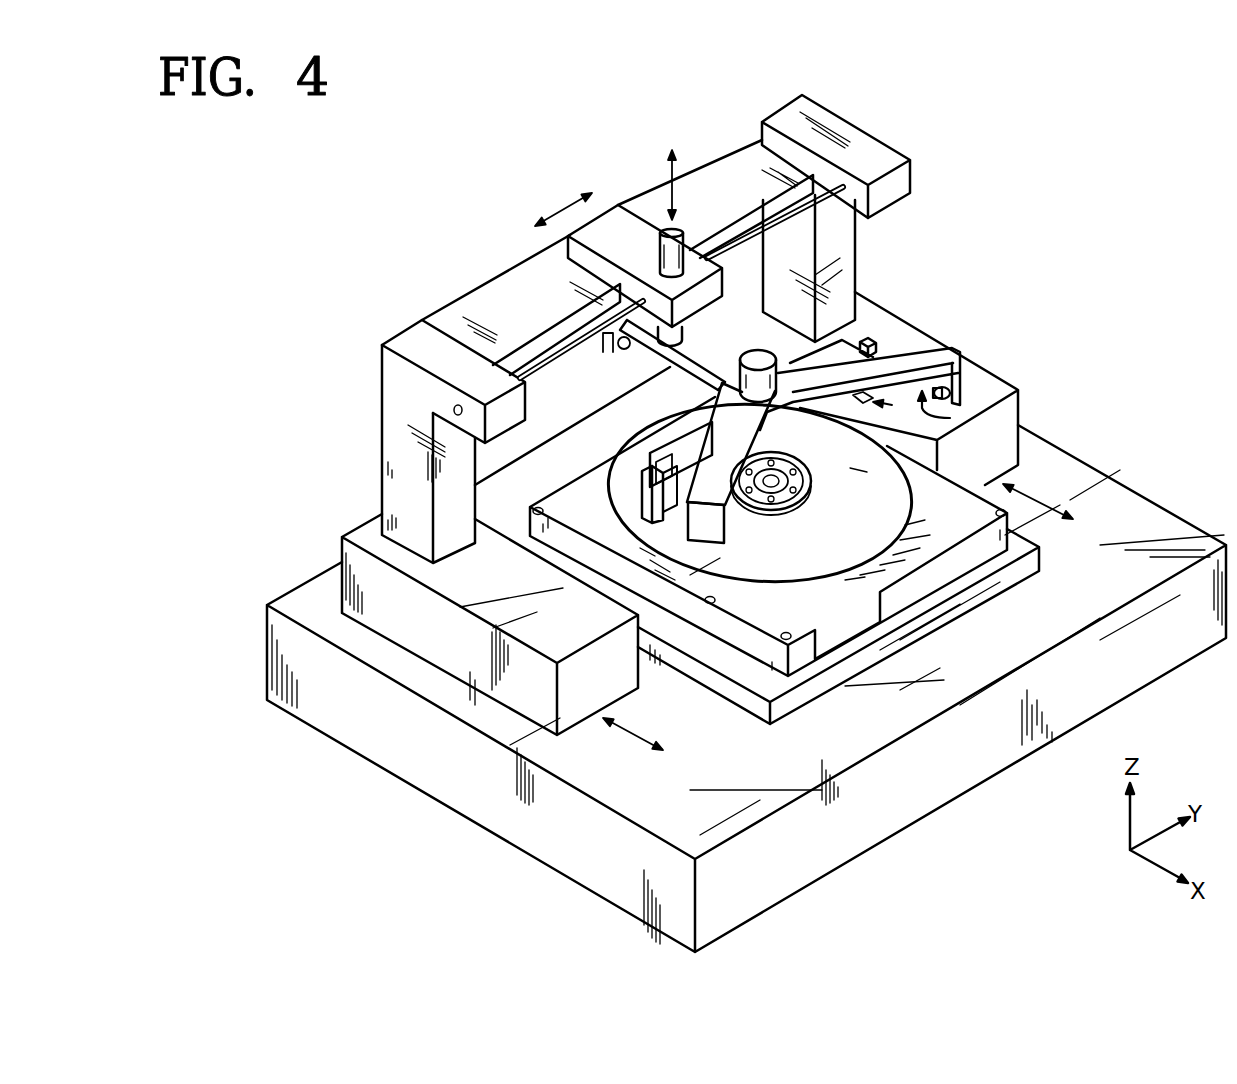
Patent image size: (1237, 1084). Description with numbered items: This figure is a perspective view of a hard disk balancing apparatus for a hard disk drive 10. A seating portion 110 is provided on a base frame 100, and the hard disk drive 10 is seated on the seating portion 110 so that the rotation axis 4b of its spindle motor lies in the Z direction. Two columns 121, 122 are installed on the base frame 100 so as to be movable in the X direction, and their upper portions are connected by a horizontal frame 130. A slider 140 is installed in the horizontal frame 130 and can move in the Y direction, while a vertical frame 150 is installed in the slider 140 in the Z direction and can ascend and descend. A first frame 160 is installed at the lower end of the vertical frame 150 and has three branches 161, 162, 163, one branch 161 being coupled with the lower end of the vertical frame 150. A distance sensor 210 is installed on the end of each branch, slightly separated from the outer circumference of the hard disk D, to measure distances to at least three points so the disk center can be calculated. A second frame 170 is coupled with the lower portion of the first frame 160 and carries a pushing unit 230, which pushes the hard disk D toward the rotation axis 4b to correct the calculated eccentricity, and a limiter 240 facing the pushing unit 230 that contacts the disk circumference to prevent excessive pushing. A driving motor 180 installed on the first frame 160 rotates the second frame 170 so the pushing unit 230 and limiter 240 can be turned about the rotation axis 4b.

The hard disk drive 10 is at (930, 592).
The rotation axis 4b is at (772, 438).
The hard disk D is at (625, 481).
The base frame 100 is at (948, 778).
The seating portion 110 is at (997, 571).
The column 121 is at (847, 132).
The column 122 is at (402, 333).
The horizontal frame 130 is at (498, 310).
The slider 140 is at (618, 227).
The vertical frame 150 is at (679, 230).
The first frame 160 is at (1018, 389).
The branch 161 is at (688, 352).
The branch 162 is at (723, 437).
The branch 163 is at (903, 362).
The second frame 170 is at (670, 447).
The driving motor 180 is at (855, 293).
The distance sensor 210 is at (950, 388).
The pushing unit 230 is at (676, 505).
The limiter 240 is at (882, 403).